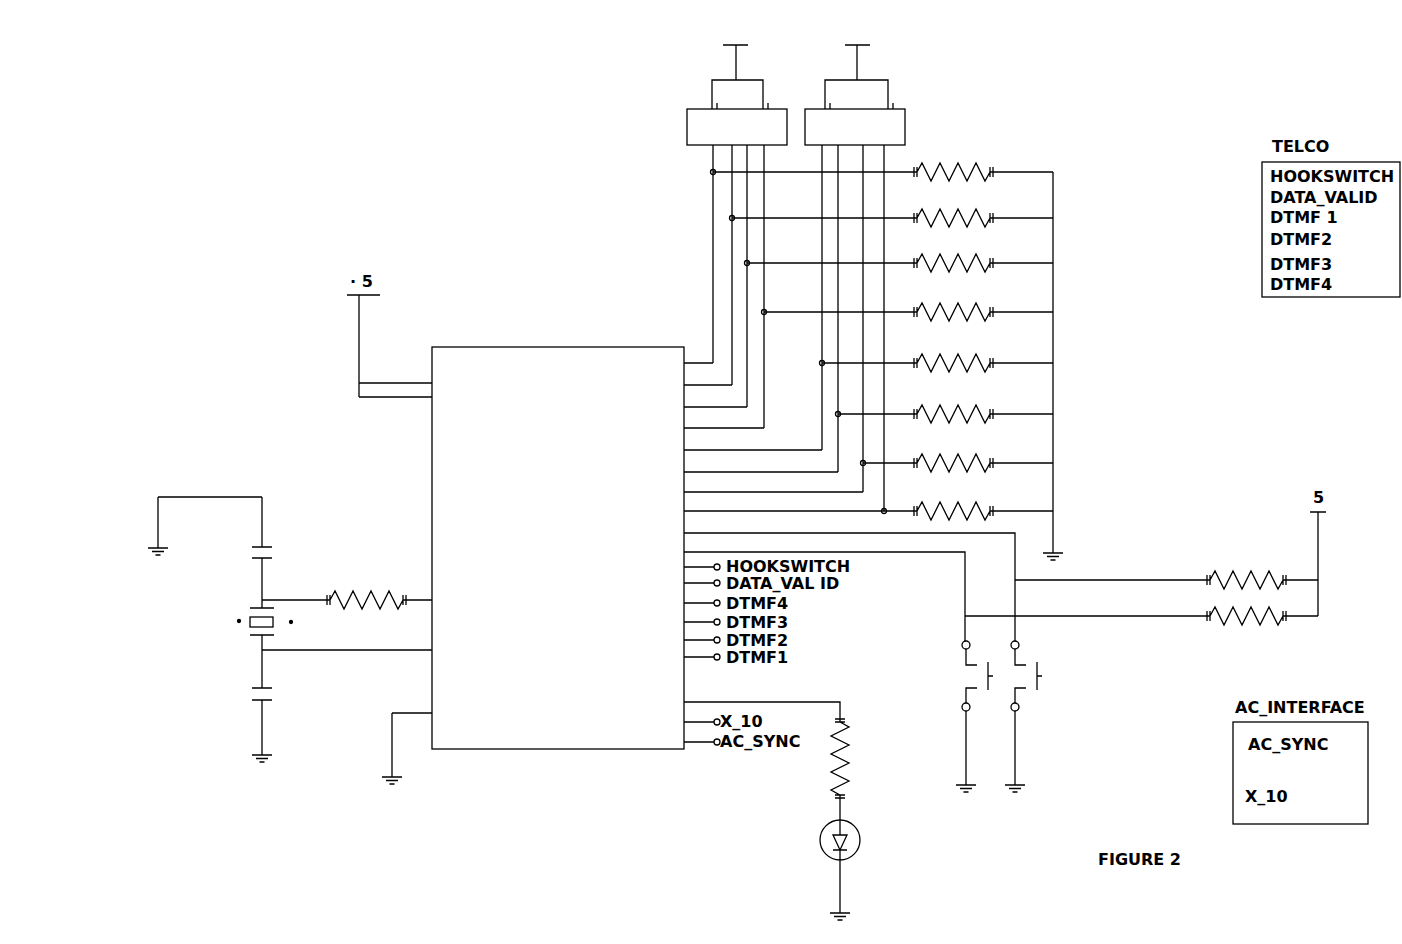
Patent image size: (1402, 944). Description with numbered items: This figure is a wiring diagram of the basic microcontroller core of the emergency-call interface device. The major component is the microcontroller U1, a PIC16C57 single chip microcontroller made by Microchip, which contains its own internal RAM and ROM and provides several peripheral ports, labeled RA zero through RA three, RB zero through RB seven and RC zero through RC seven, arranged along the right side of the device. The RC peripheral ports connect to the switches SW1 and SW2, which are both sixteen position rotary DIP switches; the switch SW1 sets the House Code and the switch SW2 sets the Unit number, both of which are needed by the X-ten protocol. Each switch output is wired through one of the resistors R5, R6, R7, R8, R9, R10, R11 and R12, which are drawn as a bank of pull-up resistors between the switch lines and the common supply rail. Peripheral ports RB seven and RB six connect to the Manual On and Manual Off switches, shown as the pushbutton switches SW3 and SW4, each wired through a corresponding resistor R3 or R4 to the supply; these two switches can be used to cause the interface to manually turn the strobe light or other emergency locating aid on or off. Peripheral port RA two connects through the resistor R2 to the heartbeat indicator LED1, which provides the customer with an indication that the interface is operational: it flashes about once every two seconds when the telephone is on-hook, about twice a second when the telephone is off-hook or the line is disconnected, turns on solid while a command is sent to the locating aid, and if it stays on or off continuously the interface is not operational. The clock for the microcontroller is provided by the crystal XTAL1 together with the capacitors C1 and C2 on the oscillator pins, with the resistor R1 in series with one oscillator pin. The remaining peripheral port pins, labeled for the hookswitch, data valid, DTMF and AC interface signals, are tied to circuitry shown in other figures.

The PIC16C57 microcontroller U1 is at (558, 548).
The 1K resistor R1 is at (347, 574).
The 2.2K resistor R2 is at (868, 769).
The 10K resistor R3 is at (1166, 557).
The 10K resistor R4 is at (1141, 642).
The 10K resistor R5 is at (998, 513).
The 10K resistor R6 is at (985, 471).
The 10K resistor R7 is at (975, 422).
The 10K resistor R8 is at (966, 372).
The 10K resistor R9 is at (936, 321).
The 10K resistor R10 is at (929, 272).
The 10K resistor R11 is at (921, 227).
The 10K resistor R12 is at (910, 181).
The 15 pF capacitor C1 is at (226, 722).
The 15 pF capacitor C2 is at (229, 552).
The 7.2 MHz crystal XTAL1 is at (216, 628).
The rotary DIP switch SW1 is at (682, 82).
The rotary DIP switch SW2 is at (917, 83).
The manual on switch SW3 is at (1087, 716).
The manual off switch SW4 is at (910, 716).
The light emitting diode LED1 is at (861, 870).